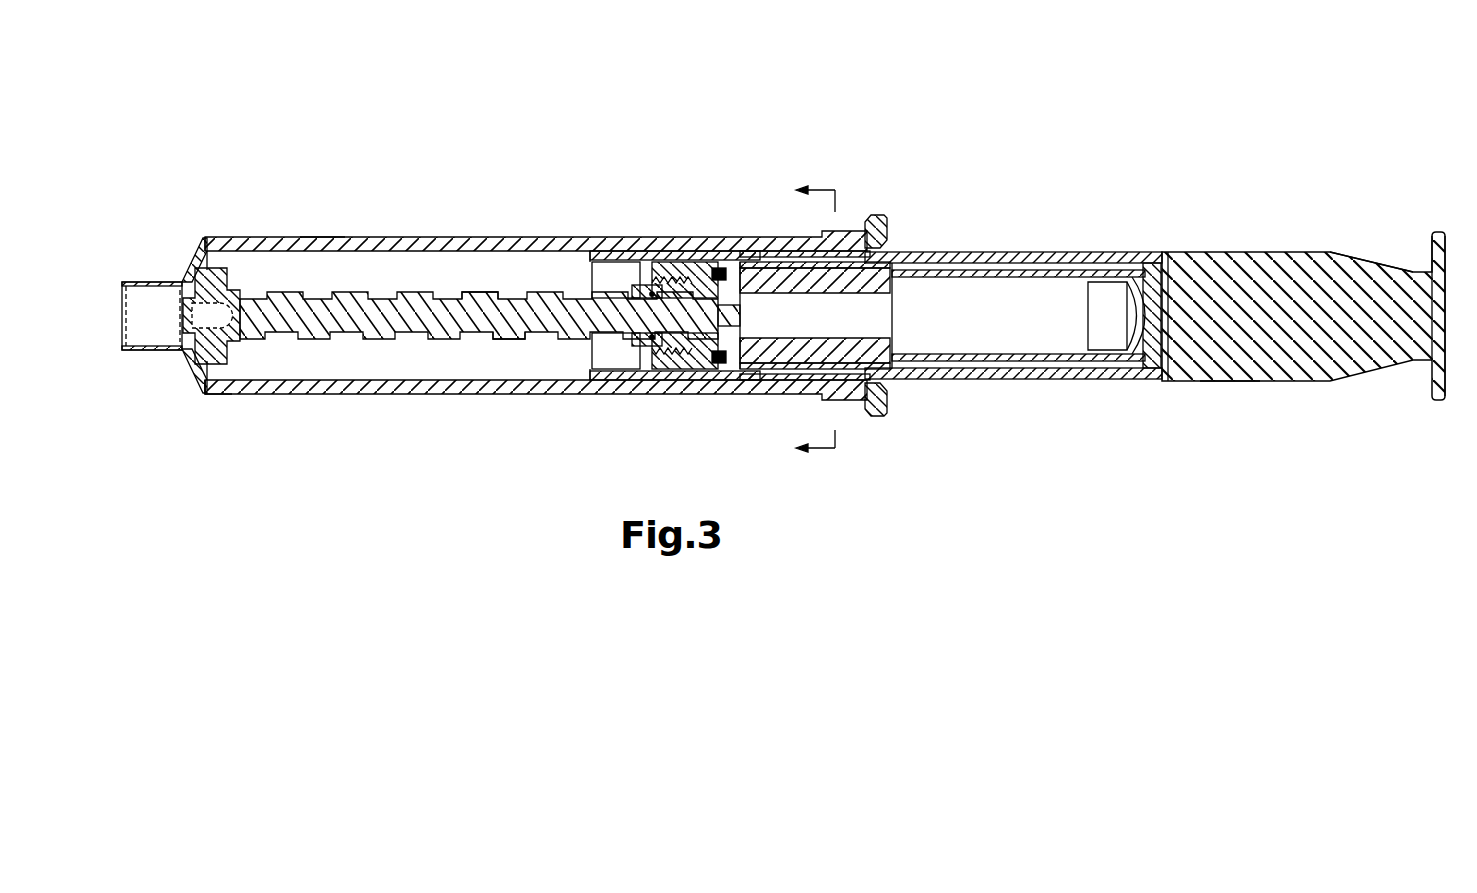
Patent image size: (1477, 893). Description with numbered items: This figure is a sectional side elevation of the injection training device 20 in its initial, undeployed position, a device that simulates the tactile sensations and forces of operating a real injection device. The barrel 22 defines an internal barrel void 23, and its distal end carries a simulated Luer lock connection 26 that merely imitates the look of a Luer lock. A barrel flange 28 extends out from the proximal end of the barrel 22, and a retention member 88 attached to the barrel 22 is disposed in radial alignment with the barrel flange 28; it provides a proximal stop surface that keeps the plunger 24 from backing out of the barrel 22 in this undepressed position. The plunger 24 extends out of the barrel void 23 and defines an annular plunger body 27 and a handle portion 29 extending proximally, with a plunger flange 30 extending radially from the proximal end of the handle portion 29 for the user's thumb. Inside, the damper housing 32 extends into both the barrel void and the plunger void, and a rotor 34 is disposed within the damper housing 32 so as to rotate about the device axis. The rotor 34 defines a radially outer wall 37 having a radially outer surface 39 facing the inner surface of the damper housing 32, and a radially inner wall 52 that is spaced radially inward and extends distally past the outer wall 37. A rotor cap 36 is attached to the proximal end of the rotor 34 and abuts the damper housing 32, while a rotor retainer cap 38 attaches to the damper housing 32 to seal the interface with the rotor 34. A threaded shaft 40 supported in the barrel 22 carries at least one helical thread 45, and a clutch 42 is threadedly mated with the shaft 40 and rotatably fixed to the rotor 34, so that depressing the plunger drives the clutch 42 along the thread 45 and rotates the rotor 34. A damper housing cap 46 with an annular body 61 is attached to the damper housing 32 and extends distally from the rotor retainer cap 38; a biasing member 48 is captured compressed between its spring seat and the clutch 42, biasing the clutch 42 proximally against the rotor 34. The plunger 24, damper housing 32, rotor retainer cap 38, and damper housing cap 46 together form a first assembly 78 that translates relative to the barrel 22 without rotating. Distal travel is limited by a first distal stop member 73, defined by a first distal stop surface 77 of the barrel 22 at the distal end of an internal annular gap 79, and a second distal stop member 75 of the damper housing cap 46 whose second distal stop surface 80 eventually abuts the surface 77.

The injection training device 20 is at (352, 114).
The barrel 22 is at (386, 236).
The internal barrel void 23 is at (321, 233).
The plunger 24 is at (1227, 251).
The simulated Luer lock connection 26 is at (142, 352).
The annular plunger body 27 is at (1027, 262).
The barrel flange 28 is at (878, 418).
The handle portion 29 is at (1296, 251).
The plunger flange 30 is at (1440, 231).
The damper housing 32 is at (1079, 251).
The rotor 34 is at (989, 251).
The rotor cap 36 is at (1160, 261).
The radially outer wall 37 is at (763, 236).
The rotor retainer cap 38 is at (708, 382).
The radially outer surface 39 is at (937, 251).
The threaded shaft 40 is at (455, 291).
The clutch 42 is at (703, 261).
The thread 45 is at (478, 341).
The damper housing cap 46 is at (621, 250).
The biasing member 48 is at (678, 261).
The radially inner wall 52 is at (755, 372).
The annular body 61 is at (602, 397).
The first distal stop member 73 is at (198, 262).
The second distal stop member 75 is at (604, 250).
The first distal stop surface 77 is at (214, 238).
The first assembly 78 is at (1212, 382).
The internal annular gap 79 is at (213, 400).
The second distal stop surface 80 is at (632, 286).
The retention member 88 is at (884, 236).